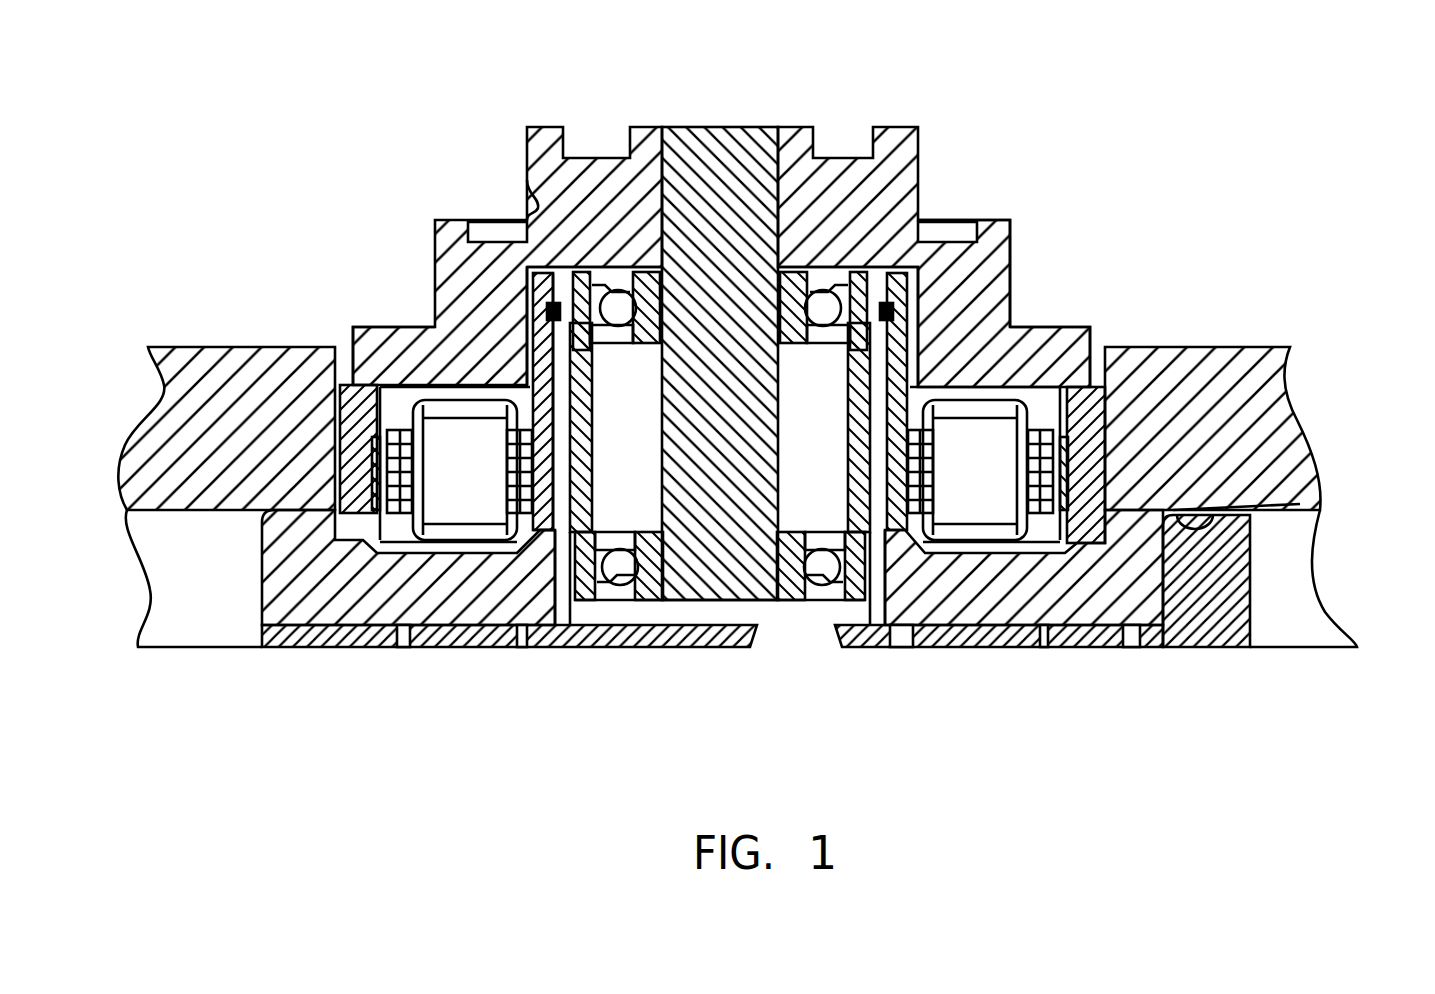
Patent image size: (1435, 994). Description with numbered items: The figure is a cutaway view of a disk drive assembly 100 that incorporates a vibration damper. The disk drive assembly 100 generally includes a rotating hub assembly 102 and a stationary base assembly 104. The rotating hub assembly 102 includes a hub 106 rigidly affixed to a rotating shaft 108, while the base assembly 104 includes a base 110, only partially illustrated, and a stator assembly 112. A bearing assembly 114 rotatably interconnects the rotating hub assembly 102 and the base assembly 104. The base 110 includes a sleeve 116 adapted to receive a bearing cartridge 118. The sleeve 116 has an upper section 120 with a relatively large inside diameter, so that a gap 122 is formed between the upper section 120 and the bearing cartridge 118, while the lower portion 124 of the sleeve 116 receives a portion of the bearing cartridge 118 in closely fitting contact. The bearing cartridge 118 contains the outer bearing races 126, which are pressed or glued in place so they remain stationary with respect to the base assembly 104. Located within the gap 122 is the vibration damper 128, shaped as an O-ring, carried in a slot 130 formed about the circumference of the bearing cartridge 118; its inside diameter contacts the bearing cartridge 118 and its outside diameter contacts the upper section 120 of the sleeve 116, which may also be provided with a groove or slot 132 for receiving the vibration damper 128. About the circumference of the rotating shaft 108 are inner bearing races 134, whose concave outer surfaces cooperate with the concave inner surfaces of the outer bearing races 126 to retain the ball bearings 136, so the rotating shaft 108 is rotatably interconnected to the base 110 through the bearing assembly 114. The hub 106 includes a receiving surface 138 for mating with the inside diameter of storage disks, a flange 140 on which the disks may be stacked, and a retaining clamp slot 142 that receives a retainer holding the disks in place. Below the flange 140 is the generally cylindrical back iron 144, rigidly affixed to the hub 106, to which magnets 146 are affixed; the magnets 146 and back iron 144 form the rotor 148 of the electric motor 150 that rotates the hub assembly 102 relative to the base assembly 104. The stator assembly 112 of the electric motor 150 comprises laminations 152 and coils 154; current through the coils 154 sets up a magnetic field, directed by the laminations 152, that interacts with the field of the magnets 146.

The disk drive assembly 100 is at (653, 63).
The rotating hub assembly 102 is at (997, 162).
The stationary base assembly 104 is at (1053, 711).
The hub 106 is at (890, 140).
The rotating shaft 108 is at (710, 150).
The base 110 is at (1270, 392).
The stator assembly 112 is at (460, 574).
The bearing assembly 114 is at (620, 612).
The sleeve 116 is at (535, 322).
The bearing cartridge 118 is at (572, 605).
The upper section of the sleeve 120 is at (535, 300).
The gap 122 is at (548, 352).
The lower portion of the sleeve 124 is at (560, 612).
The outer bearing races 126 is at (865, 600).
The vibration damper 128 is at (897, 318).
The slot 130 is at (913, 267).
The groove or slot 132 is at (545, 305).
The inner bearing races 134 is at (660, 600).
The ball bearings 136 is at (826, 575).
The receiving surface 138 is at (1010, 260).
The flange 140 is at (353, 327).
The retaining clamp slot 142 is at (530, 197).
The back iron 144 is at (345, 392).
The magnets 146 is at (385, 507).
The rotor 148 is at (326, 445).
The electric motor 150 is at (300, 600).
The laminations 152 is at (938, 460).
The coils 154 is at (1007, 537).